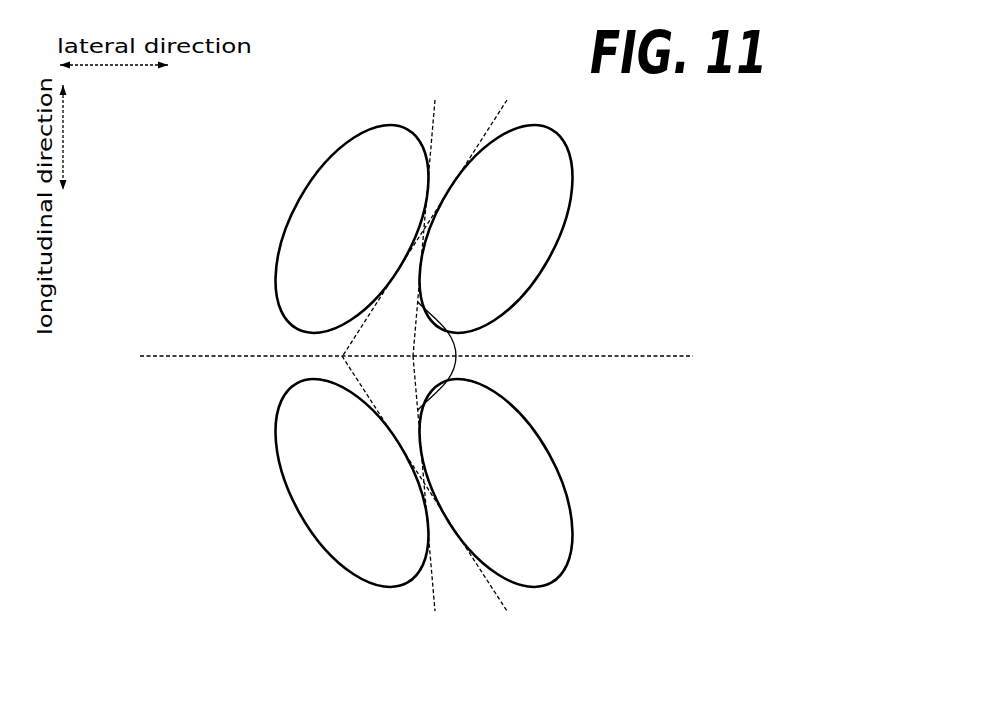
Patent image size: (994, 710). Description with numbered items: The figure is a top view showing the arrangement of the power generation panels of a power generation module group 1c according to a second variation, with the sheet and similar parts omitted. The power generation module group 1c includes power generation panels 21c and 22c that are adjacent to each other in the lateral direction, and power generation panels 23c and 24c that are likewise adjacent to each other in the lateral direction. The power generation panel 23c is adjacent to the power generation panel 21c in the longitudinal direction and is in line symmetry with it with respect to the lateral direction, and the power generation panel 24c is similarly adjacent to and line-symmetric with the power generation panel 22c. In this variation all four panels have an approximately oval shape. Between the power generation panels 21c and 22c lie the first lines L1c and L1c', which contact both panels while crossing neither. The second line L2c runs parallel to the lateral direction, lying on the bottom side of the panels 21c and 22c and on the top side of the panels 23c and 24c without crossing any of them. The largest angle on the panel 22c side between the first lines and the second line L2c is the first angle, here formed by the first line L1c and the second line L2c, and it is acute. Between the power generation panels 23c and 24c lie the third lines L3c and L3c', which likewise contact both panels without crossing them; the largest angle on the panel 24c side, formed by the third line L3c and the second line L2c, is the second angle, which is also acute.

The power generation module group 1c is at (837, 70).
The power generation panel 21c is at (303, 228).
The power generation panel 22c is at (547, 228).
The power generation panel 23c is at (303, 488).
The power generation panel 24c is at (547, 488).
The first line L1c is at (425, 211).
The first line L1c' is at (439, 212).
The second line L2c is at (446, 357).
The third line L3c is at (425, 502).
The third line L3c' is at (439, 502).